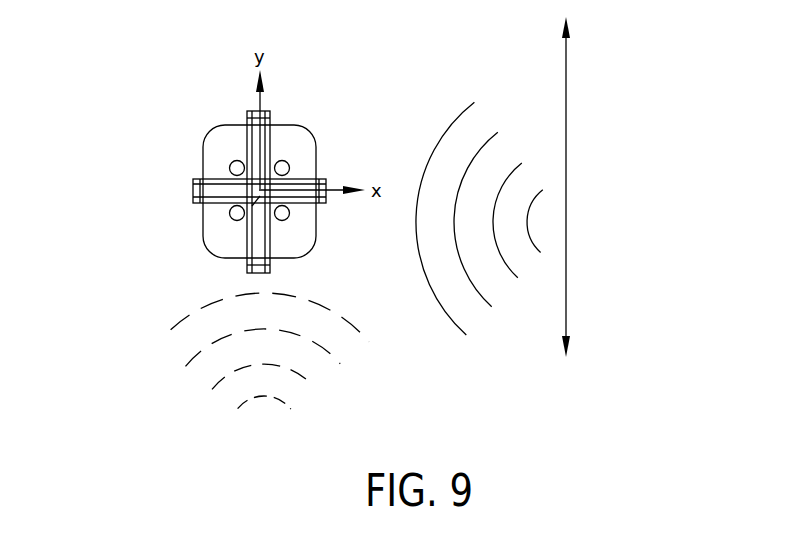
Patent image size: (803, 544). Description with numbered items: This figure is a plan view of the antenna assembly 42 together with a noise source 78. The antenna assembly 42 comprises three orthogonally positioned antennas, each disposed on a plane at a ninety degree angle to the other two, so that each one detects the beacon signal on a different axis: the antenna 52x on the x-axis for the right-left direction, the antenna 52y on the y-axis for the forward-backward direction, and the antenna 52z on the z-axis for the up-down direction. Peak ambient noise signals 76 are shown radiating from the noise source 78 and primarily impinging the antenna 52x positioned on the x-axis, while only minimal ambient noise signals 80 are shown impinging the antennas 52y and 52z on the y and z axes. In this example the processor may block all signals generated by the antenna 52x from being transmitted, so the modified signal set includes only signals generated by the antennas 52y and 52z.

The antenna assembly 42 is at (253, 162).
The antenna positioned on the x-axis 52x is at (311, 173).
The antenna positioned on the y-axis 52y is at (306, 161).
The antenna positioned on the z-axis 52z is at (201, 191).
The peak ambient noise signals 76 is at (445, 177).
The noise source 78 is at (619, 187).
The minimal ambient noise signals 80 is at (212, 350).